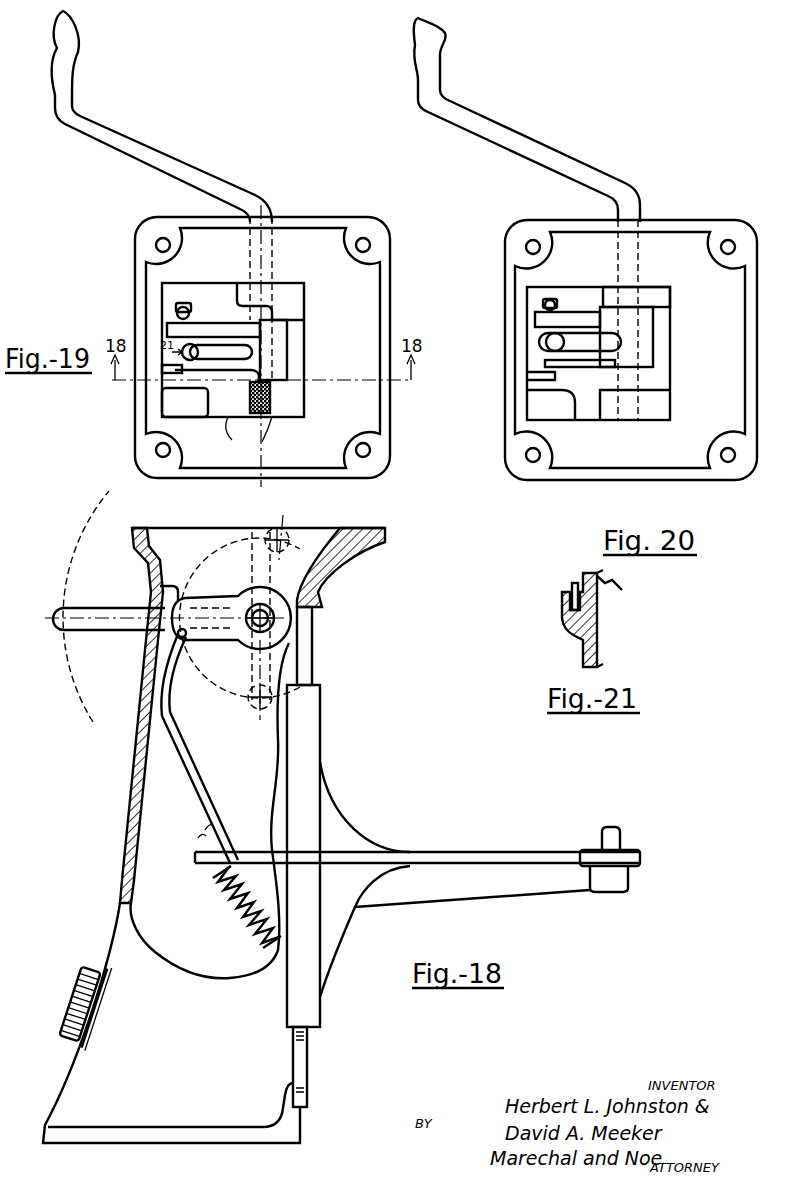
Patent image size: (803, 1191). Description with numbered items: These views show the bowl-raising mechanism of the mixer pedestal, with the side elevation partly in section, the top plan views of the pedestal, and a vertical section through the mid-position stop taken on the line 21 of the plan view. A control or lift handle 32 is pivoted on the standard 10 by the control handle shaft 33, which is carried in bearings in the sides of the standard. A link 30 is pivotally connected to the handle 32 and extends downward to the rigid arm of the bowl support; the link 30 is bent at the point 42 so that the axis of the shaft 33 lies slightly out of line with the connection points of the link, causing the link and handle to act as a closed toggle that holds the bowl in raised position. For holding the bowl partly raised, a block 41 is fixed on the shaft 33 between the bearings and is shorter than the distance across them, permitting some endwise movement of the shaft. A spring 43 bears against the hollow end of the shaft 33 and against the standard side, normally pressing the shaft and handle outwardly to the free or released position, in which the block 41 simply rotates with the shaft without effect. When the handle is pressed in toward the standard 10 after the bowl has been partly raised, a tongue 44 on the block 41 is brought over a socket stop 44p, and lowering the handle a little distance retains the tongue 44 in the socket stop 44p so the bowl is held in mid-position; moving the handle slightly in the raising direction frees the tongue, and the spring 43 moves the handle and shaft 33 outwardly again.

In FIG. 19, the standard 10 is at (298, 228).
In FIG. 20, the standard 10 is at (676, 227).
In FIG. 19, the section line 21— 21 is at (170, 393).
In FIG. 18, the section line 21— 21 is at (470, 862).
In FIG. 19, the link 30 is at (217, 352).
In FIG. 20, the link 30 is at (580, 342).
In FIG. 18, the link 30 is at (192, 776).
In FIG. 20, the control or lift handle 32 is at (563, 160).
In FIG. 18, the control or lift handle 32 is at (83, 607).
In FIG. 19, the control handle shaft 33 is at (257, 310).
In FIG. 20, the control handle shaft 33 is at (628, 277).
In FIG. 19, the block 41 is at (282, 342).
In FIG. 20, the block 41 is at (645, 347).
In FIG. 19, the bend point 42 is at (183, 311).
In FIG. 18, the bend point 42 is at (170, 688).
In FIG. 19, the spring 43 is at (270, 418).
In FIG. 19, the tongue 44 is at (215, 378).
In FIG. 20, the tongue 44 is at (574, 364).
In FIG. 21, the tongue 44 is at (571, 583).
In FIG. 18, the tongue 44 is at (195, 596).
In FIG. 21, the socket stop 44p is at (562, 600).